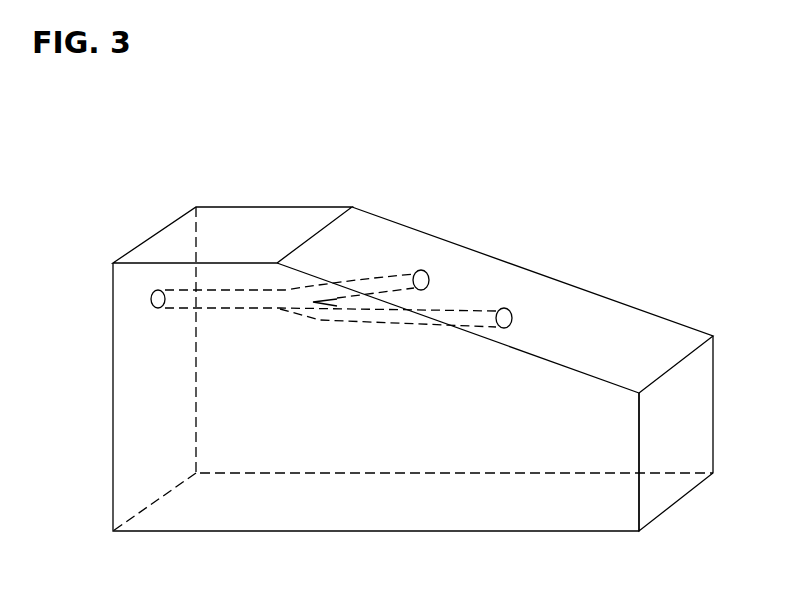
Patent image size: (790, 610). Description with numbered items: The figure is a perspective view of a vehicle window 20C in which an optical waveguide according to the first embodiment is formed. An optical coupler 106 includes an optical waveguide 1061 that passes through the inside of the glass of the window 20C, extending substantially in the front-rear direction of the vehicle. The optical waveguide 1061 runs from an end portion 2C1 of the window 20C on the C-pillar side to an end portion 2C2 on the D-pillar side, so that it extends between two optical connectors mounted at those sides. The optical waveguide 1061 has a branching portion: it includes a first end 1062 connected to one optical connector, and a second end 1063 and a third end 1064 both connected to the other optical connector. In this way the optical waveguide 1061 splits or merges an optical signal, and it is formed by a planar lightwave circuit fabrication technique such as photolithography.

The window 20C is at (183, 142).
The end portion on C-pillar side 2C1 is at (113, 443).
The end portion on D-pillar side 2C2 is at (632, 327).
The optical coupler 106 is at (338, 365).
The optical waveguide 1061 is at (233, 292).
The first end 1062 is at (145, 297).
The second end 1063 is at (422, 270).
The third end 1064 is at (512, 307).